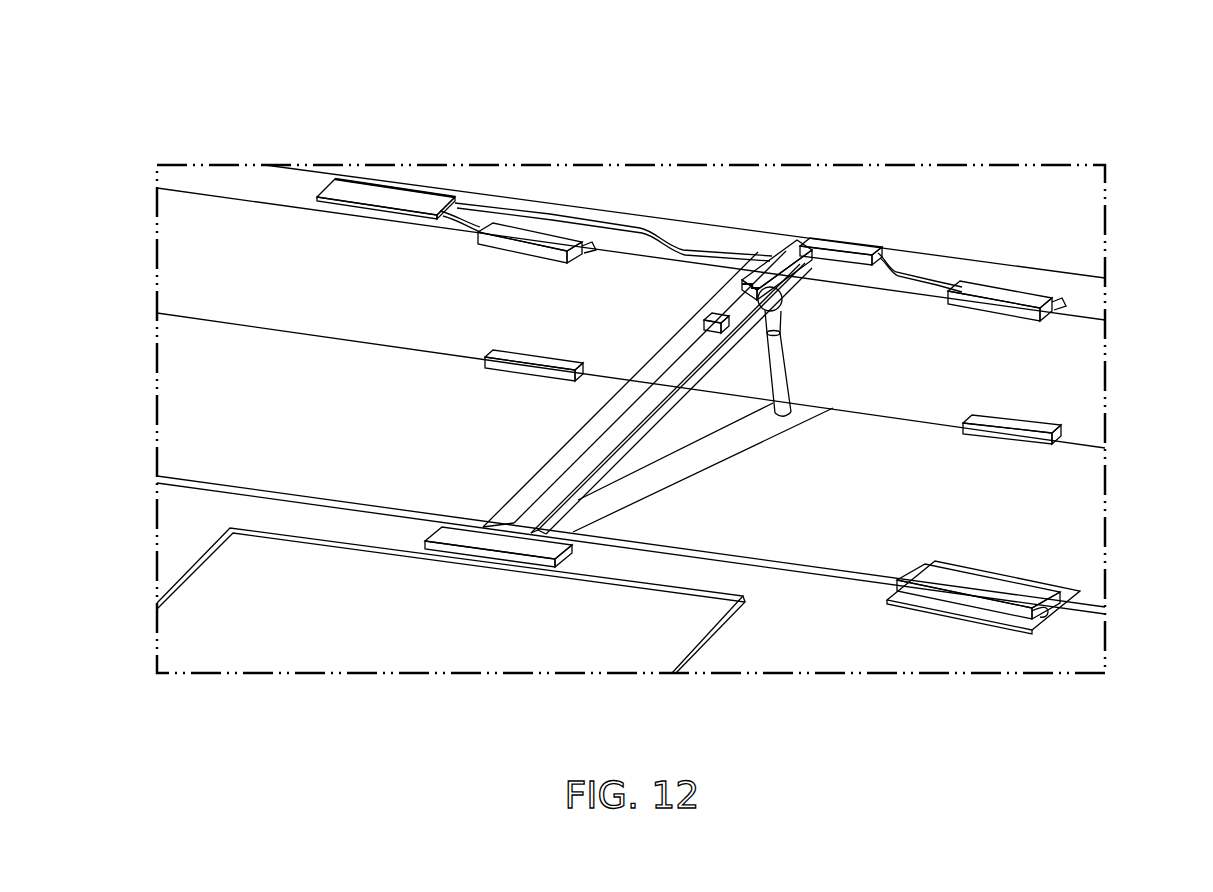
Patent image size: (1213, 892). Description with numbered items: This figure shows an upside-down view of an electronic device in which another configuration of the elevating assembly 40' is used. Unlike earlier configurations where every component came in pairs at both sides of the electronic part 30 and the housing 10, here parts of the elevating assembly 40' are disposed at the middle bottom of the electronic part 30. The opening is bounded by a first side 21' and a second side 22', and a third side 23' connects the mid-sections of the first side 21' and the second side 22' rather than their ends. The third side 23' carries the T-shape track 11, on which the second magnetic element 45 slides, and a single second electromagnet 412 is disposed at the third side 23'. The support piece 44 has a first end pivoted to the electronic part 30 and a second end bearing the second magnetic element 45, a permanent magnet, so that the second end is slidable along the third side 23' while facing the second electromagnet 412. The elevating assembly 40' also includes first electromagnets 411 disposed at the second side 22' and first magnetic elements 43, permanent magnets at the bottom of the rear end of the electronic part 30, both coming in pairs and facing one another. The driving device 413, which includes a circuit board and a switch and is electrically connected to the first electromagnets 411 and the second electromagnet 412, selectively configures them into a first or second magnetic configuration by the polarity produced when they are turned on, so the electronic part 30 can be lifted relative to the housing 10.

The housing 10 is at (1048, 652).
The T-shape track 11 is at (666, 384).
The first side 21' is at (451, 600).
The second side 22' is at (631, 218).
The third side 23' is at (631, 281).
The electronic part 30 is at (1058, 505).
The elevating assembly 40' is at (1120, 87).
The first electromagnet 411 is at (531, 226).
The second electromagnet 412 is at (789, 244).
The driving device 413 is at (376, 186).
The first magnetic element 43 is at (512, 357).
The support piece 44 is at (781, 368).
The second magnetic element 45 is at (734, 318).